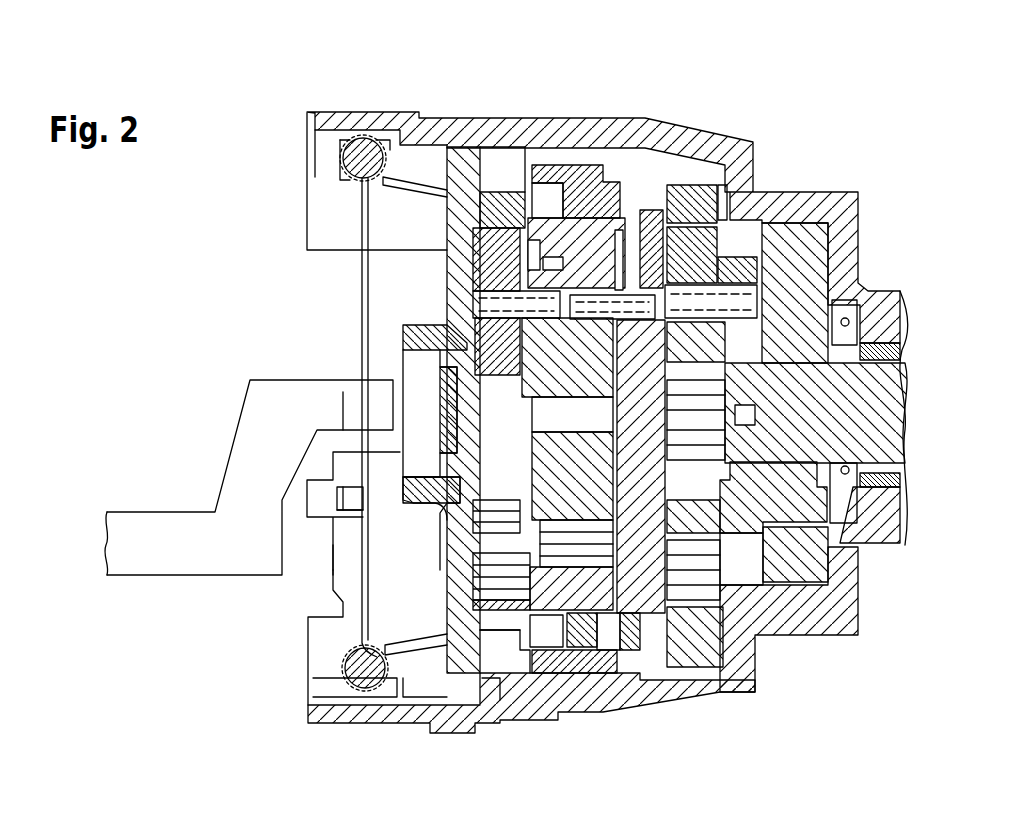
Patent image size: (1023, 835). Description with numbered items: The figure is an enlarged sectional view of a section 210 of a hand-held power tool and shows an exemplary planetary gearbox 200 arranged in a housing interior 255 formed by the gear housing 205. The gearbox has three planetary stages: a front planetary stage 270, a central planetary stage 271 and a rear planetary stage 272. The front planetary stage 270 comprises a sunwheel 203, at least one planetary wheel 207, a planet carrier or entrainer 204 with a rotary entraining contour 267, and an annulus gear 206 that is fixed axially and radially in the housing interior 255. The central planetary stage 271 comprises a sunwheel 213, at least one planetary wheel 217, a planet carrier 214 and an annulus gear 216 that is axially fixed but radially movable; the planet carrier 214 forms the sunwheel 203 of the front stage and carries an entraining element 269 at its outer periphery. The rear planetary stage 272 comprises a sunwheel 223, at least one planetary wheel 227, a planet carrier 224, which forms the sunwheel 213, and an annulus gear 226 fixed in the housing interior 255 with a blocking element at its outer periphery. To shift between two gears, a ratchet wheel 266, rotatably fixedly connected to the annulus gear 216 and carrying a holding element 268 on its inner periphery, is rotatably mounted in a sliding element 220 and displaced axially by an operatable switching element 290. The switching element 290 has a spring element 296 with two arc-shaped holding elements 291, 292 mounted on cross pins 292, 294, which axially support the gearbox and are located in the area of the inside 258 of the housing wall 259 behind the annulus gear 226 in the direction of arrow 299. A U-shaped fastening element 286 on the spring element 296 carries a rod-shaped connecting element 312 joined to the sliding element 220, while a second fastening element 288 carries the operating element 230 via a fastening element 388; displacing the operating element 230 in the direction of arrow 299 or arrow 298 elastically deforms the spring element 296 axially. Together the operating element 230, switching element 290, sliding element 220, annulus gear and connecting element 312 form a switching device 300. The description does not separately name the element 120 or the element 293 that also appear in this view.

The shaft 120 is at (860, 420).
The planetary gearbox 200 is at (677, 718).
The sunwheel 203 is at (800, 402).
The planet carrier 204 is at (845, 333).
The gear housing 205 is at (441, 116).
The annulus gear 206 is at (740, 172).
The planetary wheel 207 is at (830, 255).
The section 210 is at (930, 100).
The sunwheel 213 is at (800, 455).
The planet carrier 214 is at (790, 572).
The annulus gear 216 is at (557, 600).
The planetary wheel 217 is at (597, 240).
The sliding element 220 is at (580, 670).
The sunwheel 223 is at (457, 373).
The planet carrier 224 is at (478, 530).
The annulus gear 226 is at (463, 150).
The planetary wheel 227 is at (500, 270).
The operating element 230 is at (163, 545).
The housing interior 255 is at (255, 343).
The inside 258 is at (325, 693).
The housing wall 259 is at (705, 150).
The ratchet wheel 266 is at (575, 205).
The rotary entraining contour 267 is at (810, 503).
The holding element 268 is at (565, 173).
The entraining element 269 is at (645, 210).
The front planetary stage 270 is at (700, 580).
The central planetary stage 271 is at (625, 615).
The rear planetary stage 272 is at (500, 640).
The first fastening element 286 is at (340, 505).
The second fastening element 288 is at (353, 404).
The switching element 290 is at (350, 312).
The holding element 291 is at (370, 138).
The first cross pin 292 is at (352, 140).
The sealing ring 293 is at (343, 667).
The second cross pin 294 is at (355, 650).
The spring element 296 is at (367, 543).
The arrow 298 is at (130, 688).
The arrow 299 is at (130, 614).
The switching device 300 is at (140, 392).
The connecting element 312 is at (337, 490).
The fastening element 388 is at (333, 420).